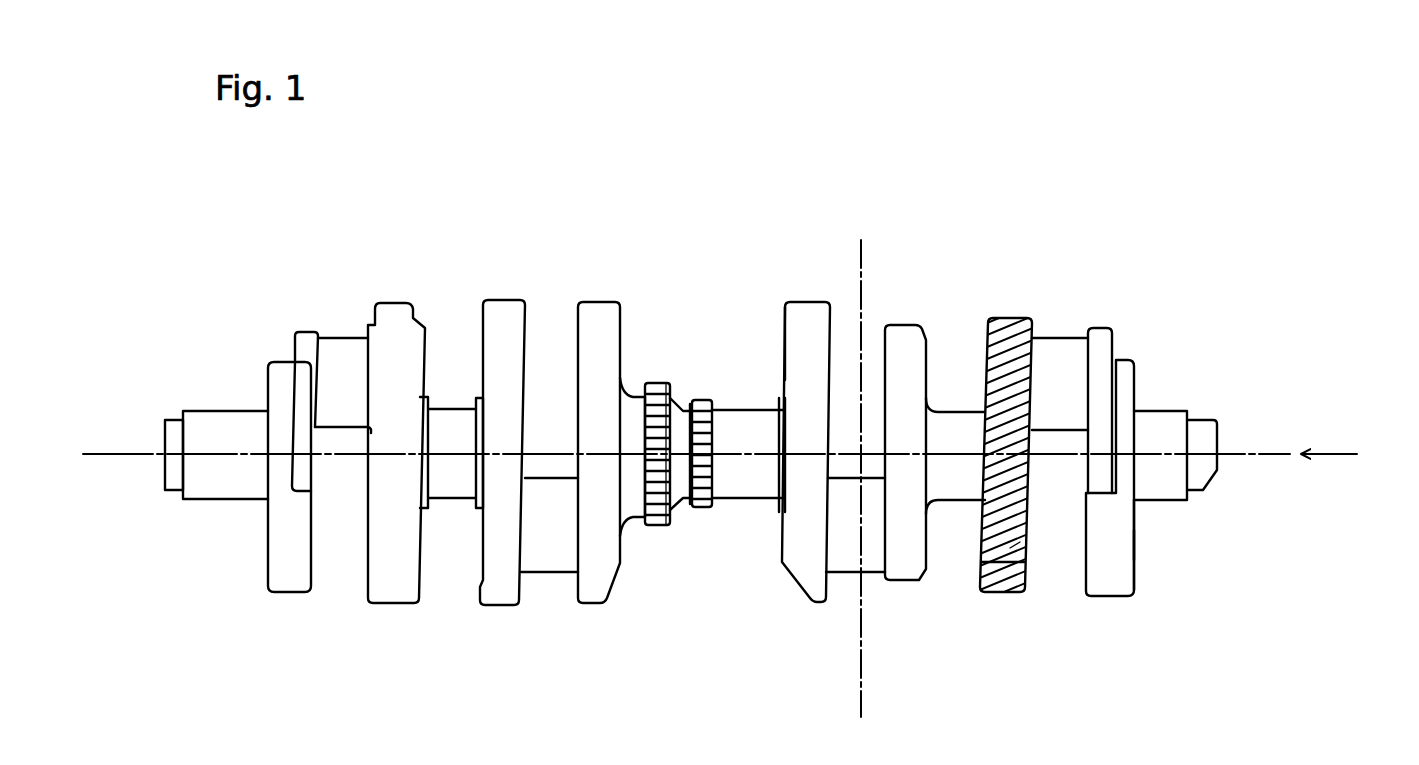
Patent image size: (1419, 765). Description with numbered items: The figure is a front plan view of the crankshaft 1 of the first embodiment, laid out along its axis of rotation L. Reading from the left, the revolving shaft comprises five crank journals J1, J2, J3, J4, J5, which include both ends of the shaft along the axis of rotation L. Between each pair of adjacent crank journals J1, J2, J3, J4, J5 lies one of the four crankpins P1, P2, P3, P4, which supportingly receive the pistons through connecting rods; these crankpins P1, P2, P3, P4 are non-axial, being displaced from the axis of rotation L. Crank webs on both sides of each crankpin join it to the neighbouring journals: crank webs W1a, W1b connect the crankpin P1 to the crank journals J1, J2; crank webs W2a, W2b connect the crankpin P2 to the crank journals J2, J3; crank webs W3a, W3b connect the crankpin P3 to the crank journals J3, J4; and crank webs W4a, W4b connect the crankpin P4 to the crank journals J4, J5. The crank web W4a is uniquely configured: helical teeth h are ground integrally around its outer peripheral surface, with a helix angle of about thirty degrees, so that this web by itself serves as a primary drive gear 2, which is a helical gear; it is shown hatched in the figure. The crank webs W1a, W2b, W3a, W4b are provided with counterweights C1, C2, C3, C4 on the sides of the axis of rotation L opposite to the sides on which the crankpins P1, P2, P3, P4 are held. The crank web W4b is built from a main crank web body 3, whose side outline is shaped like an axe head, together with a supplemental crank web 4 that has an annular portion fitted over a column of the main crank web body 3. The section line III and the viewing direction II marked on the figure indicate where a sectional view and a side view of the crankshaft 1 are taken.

The crankshaft 1 is at (700, 212).
The primary drive gear 2 is at (1000, 593).
The main crank web body 3 is at (1098, 468).
The supplemental crank web 4 is at (1136, 544).
The helical teeth h is at (1022, 546).
The axis of rotation L is at (673, 455).
The view direction II is at (1385, 467).
The section line III- III is at (815, 699).
The crank journal J1 is at (215, 409).
The crank journal J2 is at (449, 409).
The crank journal J3 is at (730, 409).
The crank journal J4 is at (950, 409).
The crank journal J5 is at (1170, 407).
The crankpin P1 is at (343, 337).
The crankpin P2 is at (547, 573).
The crankpin P3 is at (862, 575).
The crankpin P4 is at (1061, 338).
The crank web W1a is at (291, 334).
The crank web W1b is at (424, 316).
The crank web W2a is at (480, 592).
The crank web W2b is at (612, 587).
The crank web W3a is at (794, 585).
The crank web W3b is at (919, 586).
The crank web W4a is at (1004, 316).
The crank web W4b is at (1124, 332).
The counterweight C1 is at (266, 583).
The counterweight C2 is at (622, 308).
The counterweight C3 is at (786, 316).
The counterweight C4 is at (1134, 597).